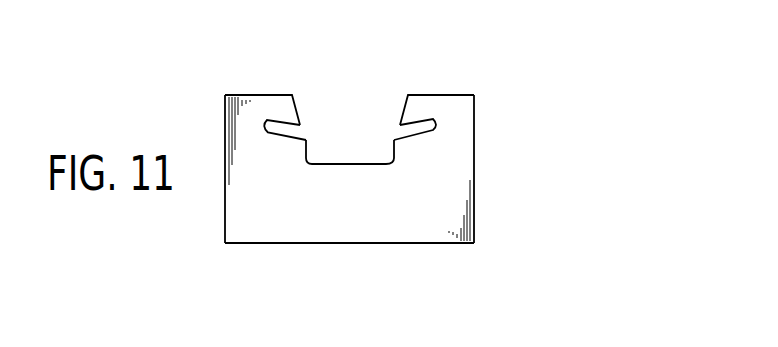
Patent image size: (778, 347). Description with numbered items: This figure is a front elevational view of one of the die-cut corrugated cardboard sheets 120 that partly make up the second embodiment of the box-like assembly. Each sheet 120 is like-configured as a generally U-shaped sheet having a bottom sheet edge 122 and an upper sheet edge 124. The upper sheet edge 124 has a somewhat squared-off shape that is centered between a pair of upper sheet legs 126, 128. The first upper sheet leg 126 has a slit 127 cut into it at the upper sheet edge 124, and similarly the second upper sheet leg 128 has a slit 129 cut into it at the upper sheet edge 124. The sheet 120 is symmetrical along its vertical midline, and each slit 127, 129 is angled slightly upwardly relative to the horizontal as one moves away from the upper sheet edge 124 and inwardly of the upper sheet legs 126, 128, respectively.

The corrugated cardboard sheet 120 is at (535, 152).
The bottom sheet edge 122 is at (357, 245).
The upper sheet edge 124 is at (352, 163).
The first upper sheet leg 126 is at (273, 103).
The slit 127 is at (283, 128).
The second upper sheet leg 128 is at (440, 103).
The slit 129 is at (412, 128).